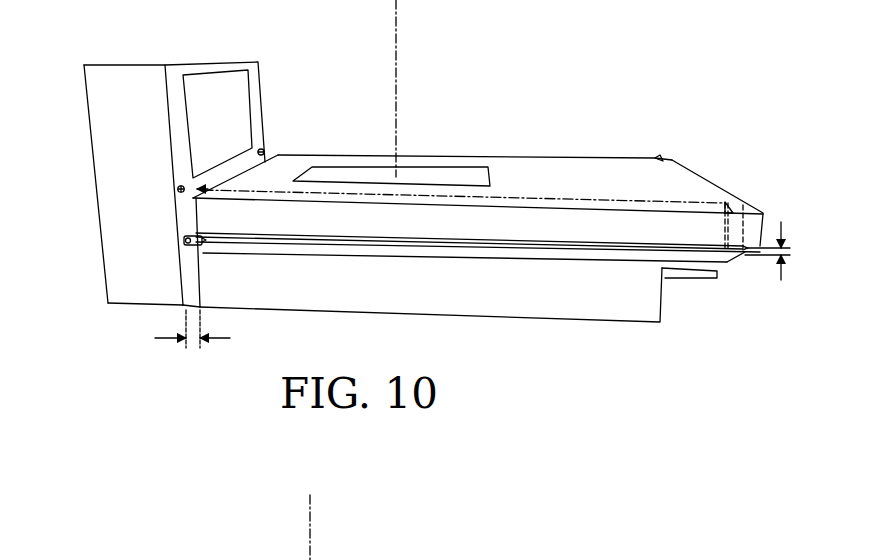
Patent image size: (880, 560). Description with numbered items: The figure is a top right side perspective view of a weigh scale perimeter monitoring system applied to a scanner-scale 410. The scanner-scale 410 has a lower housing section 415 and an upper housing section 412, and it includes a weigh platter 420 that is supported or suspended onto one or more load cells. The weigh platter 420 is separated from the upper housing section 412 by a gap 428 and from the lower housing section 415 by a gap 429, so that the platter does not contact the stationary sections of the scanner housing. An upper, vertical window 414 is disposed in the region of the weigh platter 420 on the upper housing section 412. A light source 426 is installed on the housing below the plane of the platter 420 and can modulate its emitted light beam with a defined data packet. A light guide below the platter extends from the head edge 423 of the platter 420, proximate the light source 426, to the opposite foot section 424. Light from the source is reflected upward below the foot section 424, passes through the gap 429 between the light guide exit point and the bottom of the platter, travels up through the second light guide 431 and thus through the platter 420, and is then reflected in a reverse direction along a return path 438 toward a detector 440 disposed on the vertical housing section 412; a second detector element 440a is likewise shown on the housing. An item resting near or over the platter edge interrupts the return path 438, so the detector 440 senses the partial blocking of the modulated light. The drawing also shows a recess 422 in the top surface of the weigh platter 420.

The scanner-scale 410 is at (118, 58).
The upper housing section 412 is at (113, 177).
The upper/vertical window 414 is at (240, 95).
The lower housing section 415 is at (480, 297).
The weigh platter 420 is at (545, 165).
The recess 422 is at (467, 177).
The head edge 423 is at (292, 167).
The foot section 424 is at (683, 180).
The light source 426 is at (190, 234).
The gap 428 is at (193, 345).
The gap 429 is at (781, 280).
The second light guide 431 is at (747, 227).
The return path 438 is at (570, 198).
The detector 440 is at (192, 182).
The fastener 440a is at (266, 154).